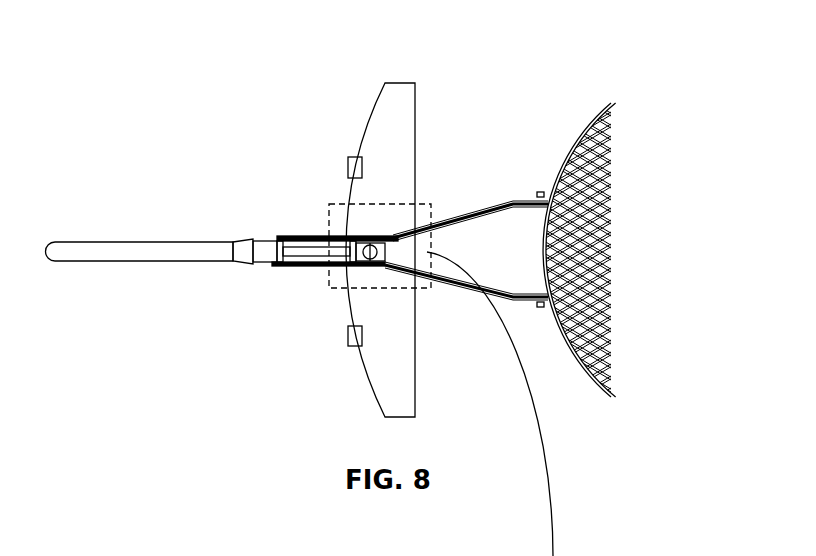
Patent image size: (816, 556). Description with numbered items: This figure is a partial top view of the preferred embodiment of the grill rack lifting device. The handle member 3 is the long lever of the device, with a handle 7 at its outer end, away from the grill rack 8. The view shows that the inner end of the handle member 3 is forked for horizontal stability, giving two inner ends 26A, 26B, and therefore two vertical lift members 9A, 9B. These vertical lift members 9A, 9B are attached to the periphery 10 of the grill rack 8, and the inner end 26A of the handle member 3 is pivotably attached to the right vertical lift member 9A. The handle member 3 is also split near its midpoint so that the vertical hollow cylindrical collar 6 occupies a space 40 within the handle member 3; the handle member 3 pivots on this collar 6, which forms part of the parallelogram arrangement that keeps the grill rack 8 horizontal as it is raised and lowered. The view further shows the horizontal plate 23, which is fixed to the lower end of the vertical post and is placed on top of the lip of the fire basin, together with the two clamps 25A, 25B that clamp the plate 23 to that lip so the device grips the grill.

The handle member 3 is at (233, 298).
The hollow cylindrical collar 6 is at (383, 267).
The handle 7 is at (110, 247).
The grill rack 8 is at (643, 333).
The right vertical lift member 9A is at (613, 272).
The vertical lift member 9B is at (613, 191).
The periphery 10 is at (585, 375).
The horizontal plate 23 is at (401, 156).
The clamp 25A is at (355, 335).
The clamp 25B is at (355, 167).
The inner end 26A is at (497, 292).
The inner end 26B is at (468, 210).
The space 40 is at (387, 247).